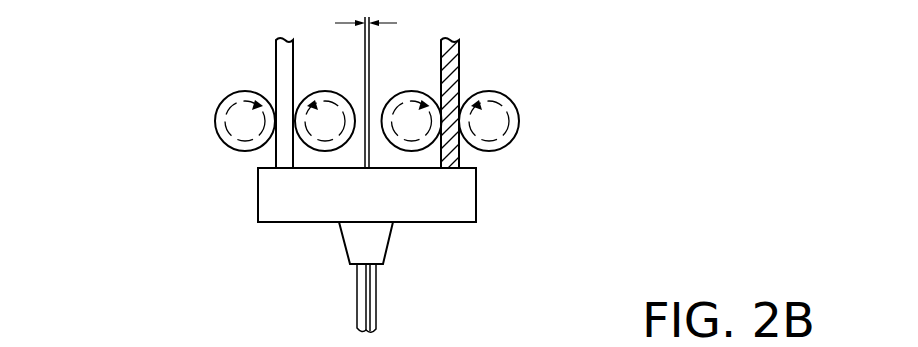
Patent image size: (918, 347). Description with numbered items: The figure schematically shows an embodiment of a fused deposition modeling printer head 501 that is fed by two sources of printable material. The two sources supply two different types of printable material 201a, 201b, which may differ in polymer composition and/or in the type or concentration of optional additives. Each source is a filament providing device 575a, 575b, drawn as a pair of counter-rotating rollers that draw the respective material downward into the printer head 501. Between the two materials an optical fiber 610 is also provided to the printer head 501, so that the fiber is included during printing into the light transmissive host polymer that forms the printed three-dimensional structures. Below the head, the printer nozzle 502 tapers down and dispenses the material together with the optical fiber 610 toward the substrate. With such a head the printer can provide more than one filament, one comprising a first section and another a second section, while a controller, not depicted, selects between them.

The first printable material 201a is at (281, 69).
The second printable material 201b is at (455, 62).
The printer head 501 is at (522, 190).
The printer nozzle 502 is at (410, 239).
The first filament providing device 575a is at (184, 124).
The second filament providing device 575b is at (566, 121).
The optical fiber 610 is at (369, 55).